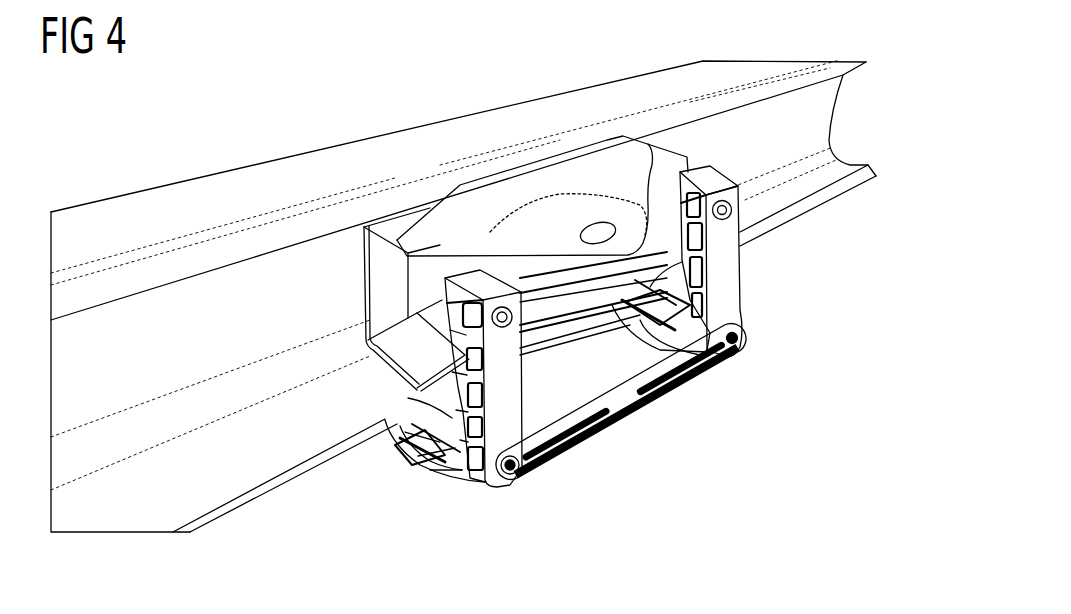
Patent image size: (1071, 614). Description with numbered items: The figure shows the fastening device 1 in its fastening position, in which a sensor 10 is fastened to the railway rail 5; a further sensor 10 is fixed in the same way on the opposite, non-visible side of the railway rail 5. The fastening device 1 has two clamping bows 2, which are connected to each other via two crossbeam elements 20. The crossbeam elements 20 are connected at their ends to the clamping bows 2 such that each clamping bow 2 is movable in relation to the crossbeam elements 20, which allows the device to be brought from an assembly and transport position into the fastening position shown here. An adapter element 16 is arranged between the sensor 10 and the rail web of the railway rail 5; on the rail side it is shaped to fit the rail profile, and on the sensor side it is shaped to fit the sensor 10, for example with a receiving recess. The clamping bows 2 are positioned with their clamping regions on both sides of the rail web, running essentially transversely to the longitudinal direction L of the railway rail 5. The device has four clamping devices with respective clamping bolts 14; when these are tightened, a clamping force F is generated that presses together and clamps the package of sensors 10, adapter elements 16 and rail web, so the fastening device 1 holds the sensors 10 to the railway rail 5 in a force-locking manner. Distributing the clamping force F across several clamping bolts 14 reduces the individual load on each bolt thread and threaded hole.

The fastening device 1 is at (615, 489).
The clamping bow 2 is at (510, 380).
The railway rail 5 is at (198, 198).
The sensor 10 is at (593, 153).
The clamping bolt 14 is at (733, 208).
The adapter element 16 is at (407, 358).
The crossbeam element 20 is at (617, 402).
The longitudinal direction L is at (367, 112).
The clamping force F is at (718, 398).